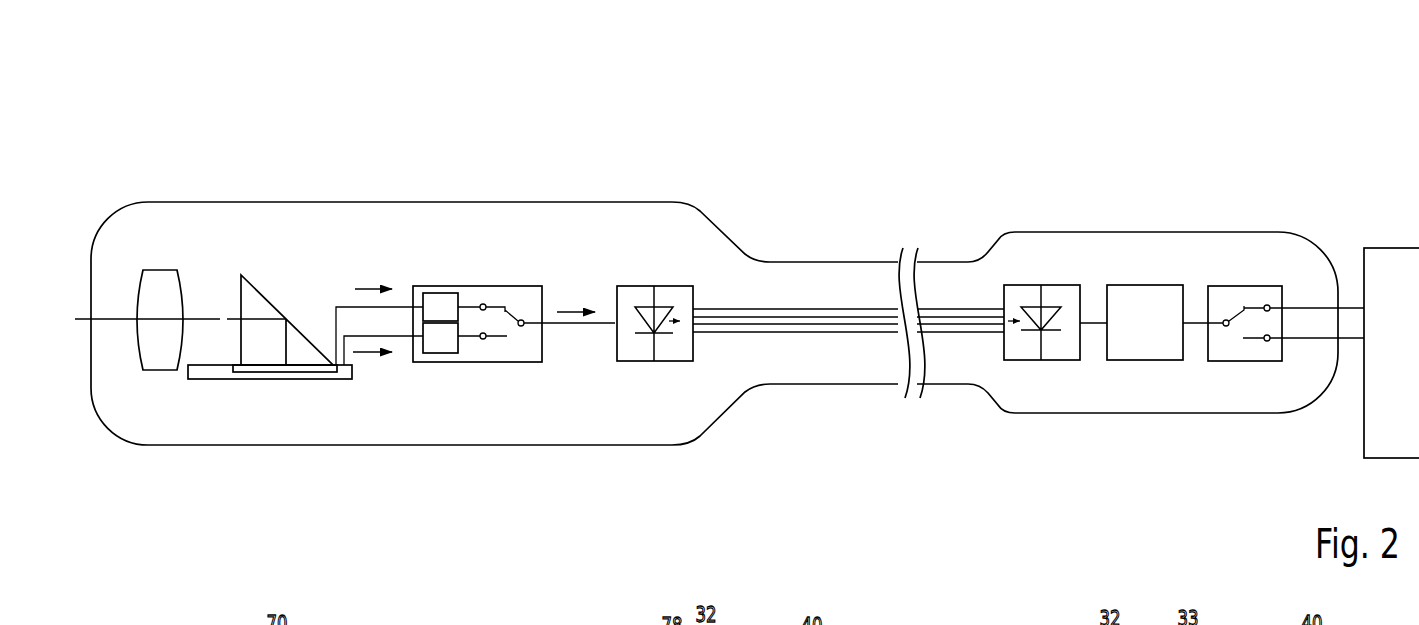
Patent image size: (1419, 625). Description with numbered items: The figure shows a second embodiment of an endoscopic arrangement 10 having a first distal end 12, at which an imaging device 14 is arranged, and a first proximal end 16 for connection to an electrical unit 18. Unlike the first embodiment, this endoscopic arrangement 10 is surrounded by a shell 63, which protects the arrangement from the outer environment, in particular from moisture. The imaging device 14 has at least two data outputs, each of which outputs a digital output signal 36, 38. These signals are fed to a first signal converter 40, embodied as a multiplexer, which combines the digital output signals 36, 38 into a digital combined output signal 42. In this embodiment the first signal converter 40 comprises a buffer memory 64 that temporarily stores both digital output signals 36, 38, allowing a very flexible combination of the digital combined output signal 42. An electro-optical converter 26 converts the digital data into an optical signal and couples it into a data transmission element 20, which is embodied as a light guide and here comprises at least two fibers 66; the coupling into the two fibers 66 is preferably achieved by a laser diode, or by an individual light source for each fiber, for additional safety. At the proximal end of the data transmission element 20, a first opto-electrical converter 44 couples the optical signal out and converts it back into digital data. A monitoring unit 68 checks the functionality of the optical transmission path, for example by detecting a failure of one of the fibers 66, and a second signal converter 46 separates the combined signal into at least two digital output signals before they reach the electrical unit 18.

The endoscopic arrangement 10 is at (1096, 125).
The first distal end 12 is at (303, 170).
The imaging device 14 is at (230, 379).
The first proximal end 16 is at (969, 220).
The electrical unit 18 is at (1410, 361).
The data transmission element 20 is at (848, 284).
The electro-optical converter 26 is at (642, 286).
The digital output signal 36 is at (368, 287).
The digital output signal 38 is at (377, 357).
The first signal converter 40 is at (514, 247).
The digital combined output signal 42 is at (577, 308).
The first opto-electrical converter 44 is at (1020, 285).
The second signal converter 46 is at (1236, 285).
The shell 63 is at (527, 445).
The buffer memory 64 is at (441, 268).
The fibers 66 is at (812, 309).
The monitoring unit 68 is at (1135, 285).